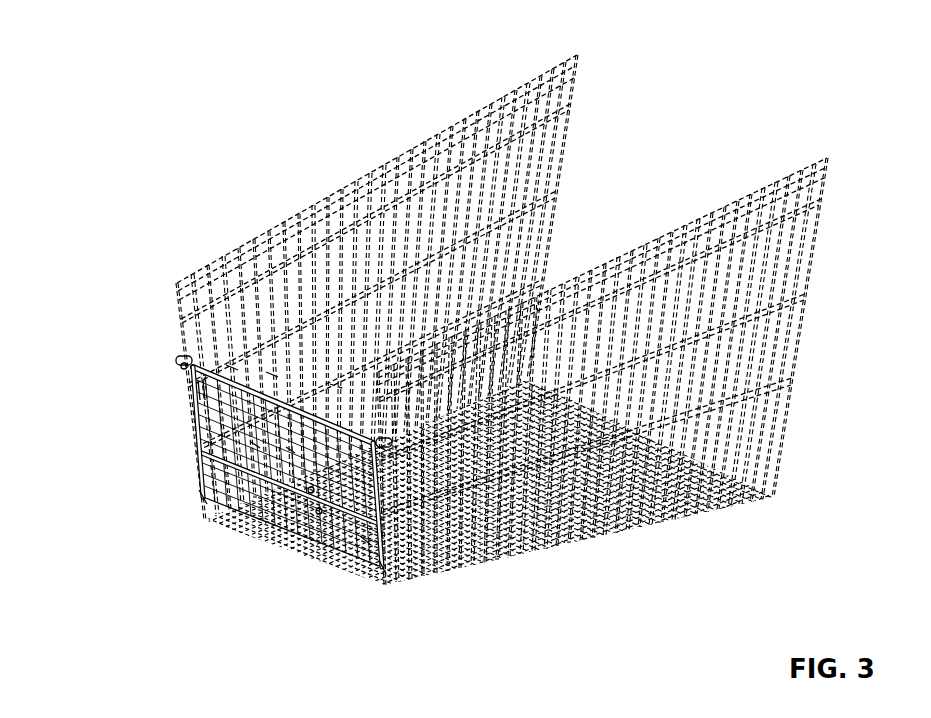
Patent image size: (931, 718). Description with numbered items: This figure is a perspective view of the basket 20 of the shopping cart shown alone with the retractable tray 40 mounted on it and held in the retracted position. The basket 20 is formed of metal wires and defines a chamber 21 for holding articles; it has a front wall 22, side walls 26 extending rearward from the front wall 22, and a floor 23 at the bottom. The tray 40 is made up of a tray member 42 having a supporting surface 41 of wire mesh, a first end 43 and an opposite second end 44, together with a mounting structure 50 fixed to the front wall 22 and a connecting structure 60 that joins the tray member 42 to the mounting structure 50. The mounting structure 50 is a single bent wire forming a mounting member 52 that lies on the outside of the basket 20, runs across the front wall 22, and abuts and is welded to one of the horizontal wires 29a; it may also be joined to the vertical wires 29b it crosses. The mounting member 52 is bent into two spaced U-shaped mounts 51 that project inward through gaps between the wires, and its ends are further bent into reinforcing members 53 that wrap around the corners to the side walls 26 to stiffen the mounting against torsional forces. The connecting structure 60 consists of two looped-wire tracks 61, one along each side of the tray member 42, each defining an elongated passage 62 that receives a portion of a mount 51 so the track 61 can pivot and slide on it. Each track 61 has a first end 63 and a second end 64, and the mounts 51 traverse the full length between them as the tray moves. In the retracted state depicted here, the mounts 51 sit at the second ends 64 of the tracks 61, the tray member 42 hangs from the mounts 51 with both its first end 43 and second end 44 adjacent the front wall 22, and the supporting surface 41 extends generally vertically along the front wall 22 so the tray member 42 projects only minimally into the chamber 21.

The basket 20 is at (737, 203).
The chamber 21 is at (572, 212).
The front wall 22 is at (335, 385).
The floor 23 is at (578, 485).
The side walls 26 is at (490, 160).
The horizontal wire 29a is at (181, 366).
The vertical wires 29b is at (318, 512).
The retractable tray 40 is at (273, 362).
The supporting surface 41 is at (290, 450).
The tray member 42 is at (255, 445).
The first end 43 is at (335, 545).
The second end 44 is at (233, 355).
The mounting structure 50 is at (206, 434).
The mounts 51 is at (196, 371).
The mounting member 52 is at (202, 387).
The reinforcing members 53 is at (182, 356).
The connecting structure 60 is at (365, 540).
The tracks 61 is at (206, 413).
The passage 62 is at (383, 447).
The first end 63 is at (189, 495).
The second end 64 is at (196, 350).